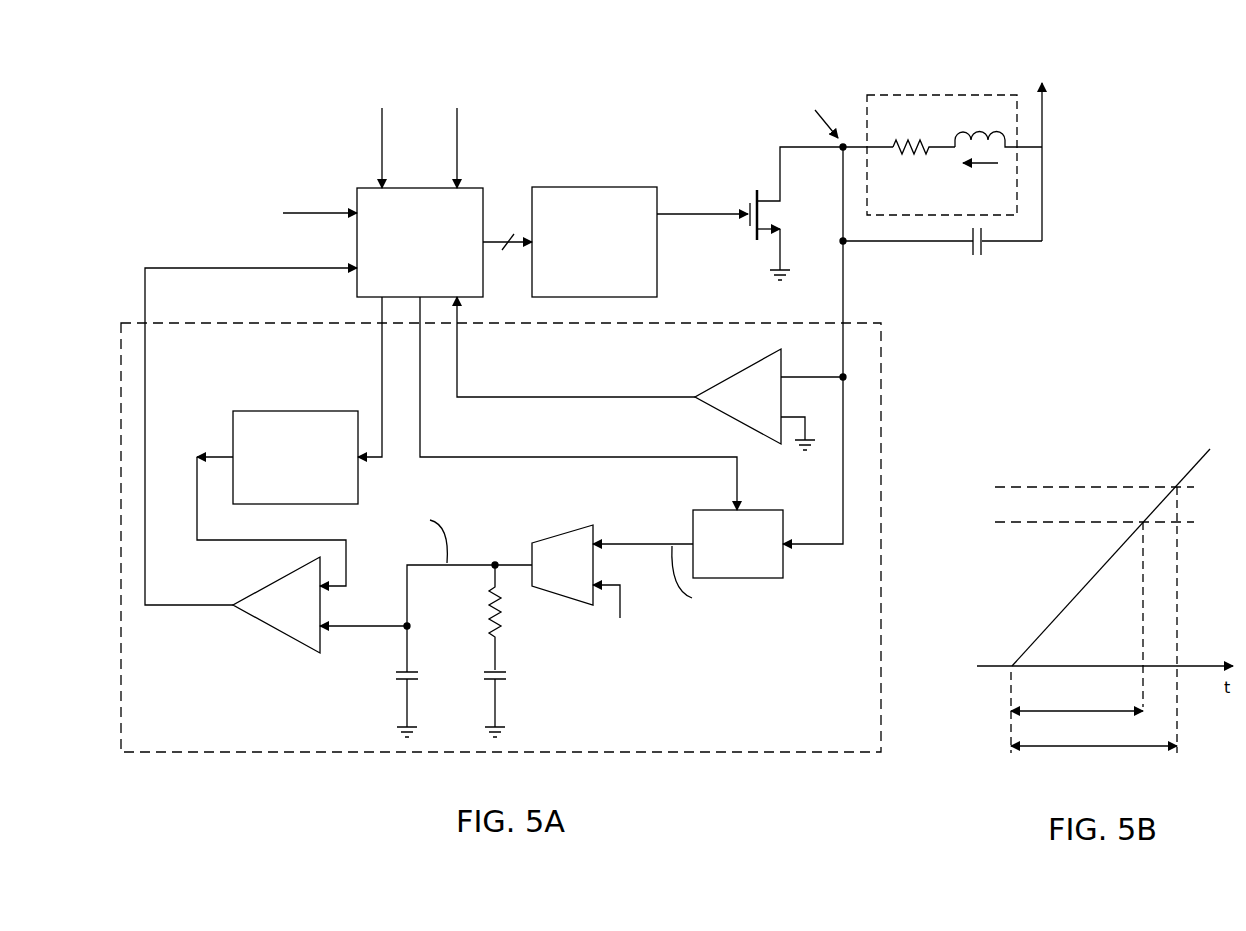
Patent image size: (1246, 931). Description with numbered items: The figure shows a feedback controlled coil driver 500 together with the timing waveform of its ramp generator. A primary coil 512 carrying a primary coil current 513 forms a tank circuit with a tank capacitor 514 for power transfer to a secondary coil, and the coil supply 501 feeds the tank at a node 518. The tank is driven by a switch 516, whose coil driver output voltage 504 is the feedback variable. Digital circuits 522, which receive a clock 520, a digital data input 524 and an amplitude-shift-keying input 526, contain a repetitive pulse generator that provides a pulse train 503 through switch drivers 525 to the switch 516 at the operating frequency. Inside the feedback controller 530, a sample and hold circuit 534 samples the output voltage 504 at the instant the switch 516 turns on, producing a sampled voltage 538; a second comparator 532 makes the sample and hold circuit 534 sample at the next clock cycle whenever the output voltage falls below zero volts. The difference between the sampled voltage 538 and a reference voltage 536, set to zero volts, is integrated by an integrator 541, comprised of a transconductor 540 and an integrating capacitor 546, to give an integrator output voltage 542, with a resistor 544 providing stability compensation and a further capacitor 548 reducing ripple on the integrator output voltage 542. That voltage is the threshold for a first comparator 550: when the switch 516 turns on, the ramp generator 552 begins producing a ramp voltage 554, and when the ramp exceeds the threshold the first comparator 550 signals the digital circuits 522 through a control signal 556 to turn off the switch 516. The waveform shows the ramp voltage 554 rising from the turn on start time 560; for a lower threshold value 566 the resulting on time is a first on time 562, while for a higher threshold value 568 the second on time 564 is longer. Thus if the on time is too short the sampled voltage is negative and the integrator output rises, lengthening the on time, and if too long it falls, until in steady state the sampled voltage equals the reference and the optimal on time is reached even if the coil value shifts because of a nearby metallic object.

In FIG. 5A, the feedback controlled coil driver 500 is at (1060, 348).
In FIG. 5A, the coil supply VLP 501 is at (1060, 72).
In FIG. 5A, the pulse train VSW 503 is at (637, 136).
In FIG. 5A, the coil driver output voltage VL 504 is at (782, 108).
In FIG. 5A, the primary coil LP 512 is at (987, 95).
In FIG. 5A, the primary coil current IL 513 is at (1000, 184).
In FIG. 5A, the capacitor CT 514 is at (993, 286).
In FIG. 5A, the switch MS 516 is at (793, 222).
In FIG. 5A, the coil terminal node 518 is at (886, 140).
In FIG. 5A, the clock 520 is at (242, 193).
In FIG. 5A, the digital circuits 522 is at (444, 242).
In FIG. 5A, the digital input DATA 524 is at (355, 93).
In FIG. 5A, the switch drivers 525 is at (640, 238).
In FIG. 5A, the ASK input 526 is at (478, 92).
In FIG. 5A, the feedback controller 530 is at (501, 537).
In FIG. 5A, the comparator CO2 532 is at (737, 367).
In FIG. 5A, the sample and hold circuit S/H 534 is at (601, 437).
In FIG. 5A, the reference voltage VREF 536 is at (580, 638).
In FIG. 5A, the sampled voltage VLS 538 is at (718, 616).
In FIG. 5A, the transconductor GM 540 is at (568, 545).
In FIG. 5A, the integrator 541 is at (655, 677).
In FIG. 5A, the voltage VIO 542 is at (414, 507).
In FIG. 5A, the resistor RI 544 is at (512, 630).
In FIG. 5A, the capacitor CI 546 is at (516, 690).
In FIG. 5A, the capacitor CR 548 is at (370, 690).
In FIG. 5A, the comparator CO1 550 is at (290, 635).
In FIG. 5A, the ramp generator 552 is at (307, 400).
In FIG. 5A, the ramp voltage VRAMP 554 is at (218, 452).
In FIG. 5B, the ramp voltage VRAMP 554 is at (1179, 465).
In FIG. 5A, the control signal 556 is at (165, 602).
In FIG. 5B, the start time TST 560 is at (1013, 786).
In FIG. 5B, the on time TON1 562 is at (1085, 672).
In FIG. 5B, the on time TON2 564 is at (1094, 637).
In FIG. 5B, the integrator voltage VIO1 566 is at (982, 531).
In FIG. 5B, the integrator voltage VIO2 568 is at (968, 467).